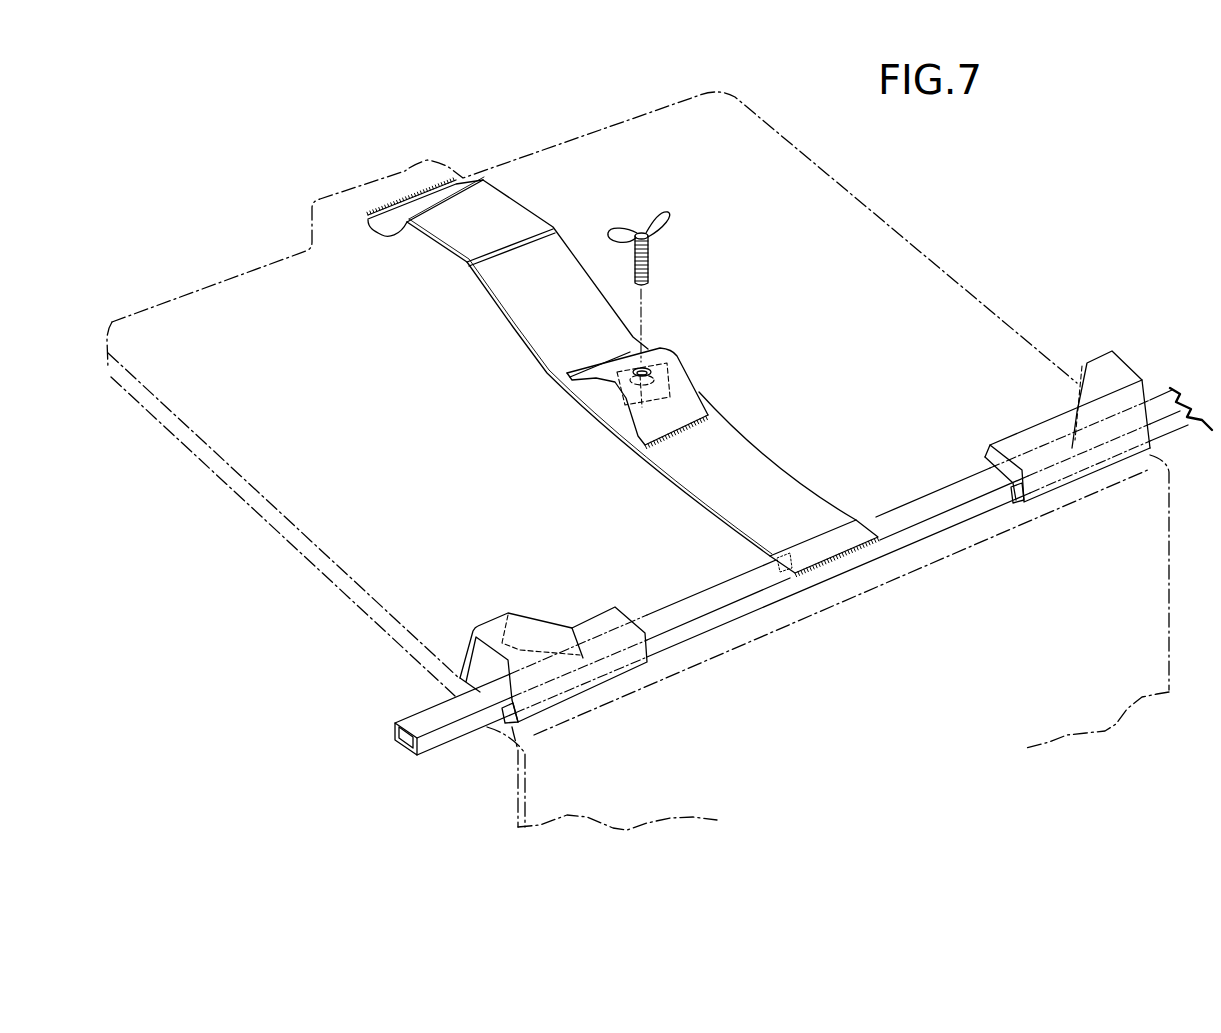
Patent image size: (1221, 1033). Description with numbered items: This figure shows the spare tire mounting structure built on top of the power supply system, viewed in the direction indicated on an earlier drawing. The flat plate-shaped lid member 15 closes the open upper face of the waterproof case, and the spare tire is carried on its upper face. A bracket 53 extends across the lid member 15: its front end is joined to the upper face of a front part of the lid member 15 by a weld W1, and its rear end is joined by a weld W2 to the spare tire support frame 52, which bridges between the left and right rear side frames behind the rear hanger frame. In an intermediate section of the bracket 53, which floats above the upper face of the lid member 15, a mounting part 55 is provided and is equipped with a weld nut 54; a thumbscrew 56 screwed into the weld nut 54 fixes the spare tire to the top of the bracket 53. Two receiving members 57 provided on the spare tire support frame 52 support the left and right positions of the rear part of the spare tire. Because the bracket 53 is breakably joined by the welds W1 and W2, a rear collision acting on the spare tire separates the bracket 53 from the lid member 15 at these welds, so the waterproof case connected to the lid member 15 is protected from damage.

The lid member 15 is at (916, 242).
The spare tire support frame 52 is at (907, 510).
The bracket 53 is at (510, 307).
The weld nut 54 is at (658, 372).
The mounting part 55 is at (683, 389).
The thumbscrew 56 is at (664, 221).
The receiving member 57 is at (535, 625).
The weld W1 is at (397, 210).
The weld W2 is at (864, 548).